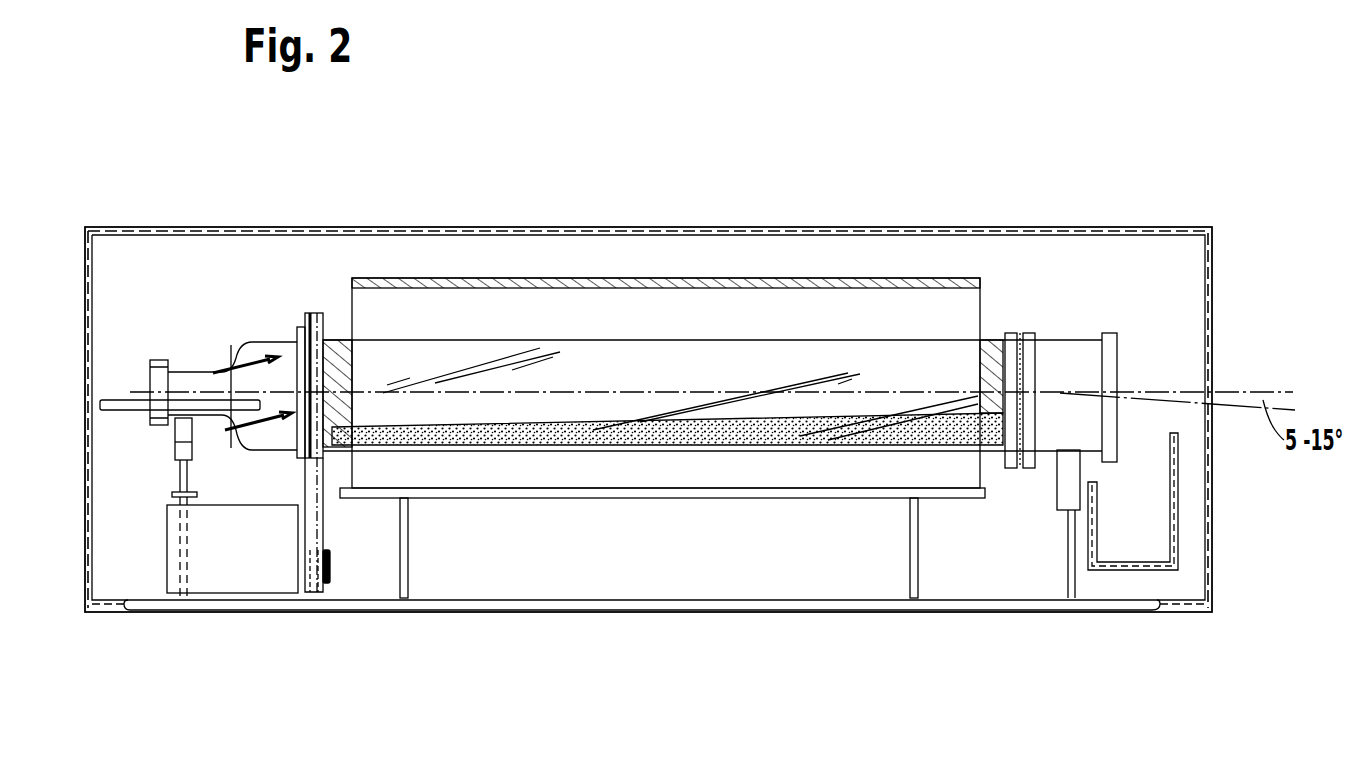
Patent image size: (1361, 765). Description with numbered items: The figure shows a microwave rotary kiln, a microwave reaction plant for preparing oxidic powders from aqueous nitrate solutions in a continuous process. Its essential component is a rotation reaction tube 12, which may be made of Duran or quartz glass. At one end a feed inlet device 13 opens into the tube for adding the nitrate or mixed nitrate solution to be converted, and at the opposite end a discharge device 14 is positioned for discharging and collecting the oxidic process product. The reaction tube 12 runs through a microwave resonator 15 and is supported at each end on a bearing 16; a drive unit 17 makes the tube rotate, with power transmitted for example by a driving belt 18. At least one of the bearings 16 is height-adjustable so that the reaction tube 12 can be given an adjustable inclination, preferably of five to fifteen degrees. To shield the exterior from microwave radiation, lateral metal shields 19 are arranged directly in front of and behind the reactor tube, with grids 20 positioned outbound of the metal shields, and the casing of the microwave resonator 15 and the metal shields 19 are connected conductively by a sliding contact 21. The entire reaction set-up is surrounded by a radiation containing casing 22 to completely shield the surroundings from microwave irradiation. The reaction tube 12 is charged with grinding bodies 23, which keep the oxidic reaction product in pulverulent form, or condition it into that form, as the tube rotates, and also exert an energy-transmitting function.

The rotation reaction tube 12 is at (417, 347).
The feed inlet device 13 is at (118, 428).
The discharge device 14 is at (1133, 501).
The microwave resonator 15 is at (638, 303).
The bearing 16 is at (1062, 488).
The drive unit 17 is at (232, 549).
The driving belt 18 is at (345, 532).
The lateral metal shield 19 is at (1028, 290).
The grid 20 is at (258, 320).
The sliding contact 21 is at (1007, 273).
The radiation containing casing 22 is at (770, 230).
The grinding bodies 23 is at (793, 428).